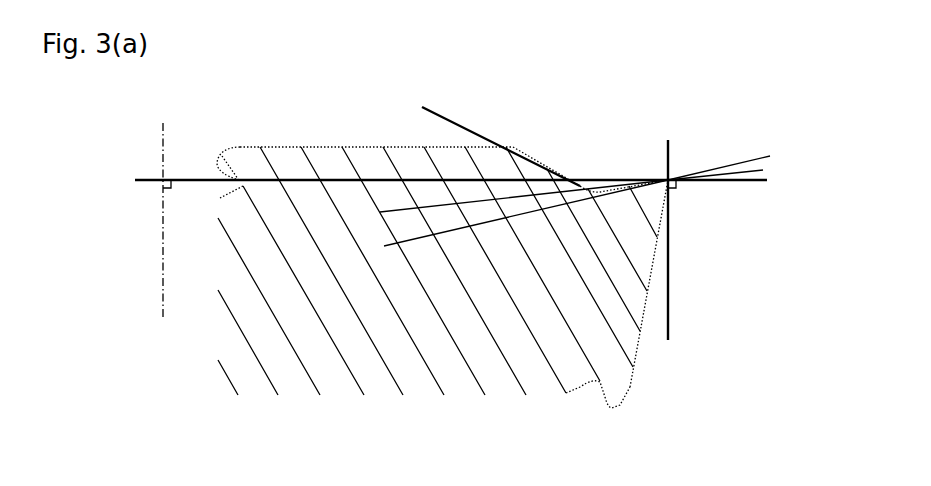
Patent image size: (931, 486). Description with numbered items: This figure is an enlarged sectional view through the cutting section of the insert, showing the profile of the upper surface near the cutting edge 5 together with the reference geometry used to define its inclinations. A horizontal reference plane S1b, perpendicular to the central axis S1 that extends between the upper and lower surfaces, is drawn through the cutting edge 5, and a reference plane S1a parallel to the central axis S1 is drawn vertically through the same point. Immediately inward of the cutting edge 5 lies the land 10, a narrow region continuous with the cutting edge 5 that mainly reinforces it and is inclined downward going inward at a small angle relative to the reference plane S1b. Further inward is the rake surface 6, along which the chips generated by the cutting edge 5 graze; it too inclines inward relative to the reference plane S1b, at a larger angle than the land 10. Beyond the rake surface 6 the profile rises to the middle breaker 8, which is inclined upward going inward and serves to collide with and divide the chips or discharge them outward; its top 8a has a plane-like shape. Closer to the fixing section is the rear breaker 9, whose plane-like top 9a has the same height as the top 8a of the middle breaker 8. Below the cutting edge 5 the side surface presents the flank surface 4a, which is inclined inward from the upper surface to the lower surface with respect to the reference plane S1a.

The rear breaker 9 is at (430, 65).
The middle breaker 8 is at (592, 65).
The top of the rear breaker 9a is at (322, 147).
The top of the middle breaker 8a is at (457, 147).
The rake surface 6 is at (634, 184).
The land 10 is at (667, 179).
The cutting edge 5 is at (668, 180).
The central axis S1 is at (160, 132).
The reference plane S1a is at (668, 300).
The reference plane S1b is at (733, 181).
The flank surface 4a is at (645, 330).